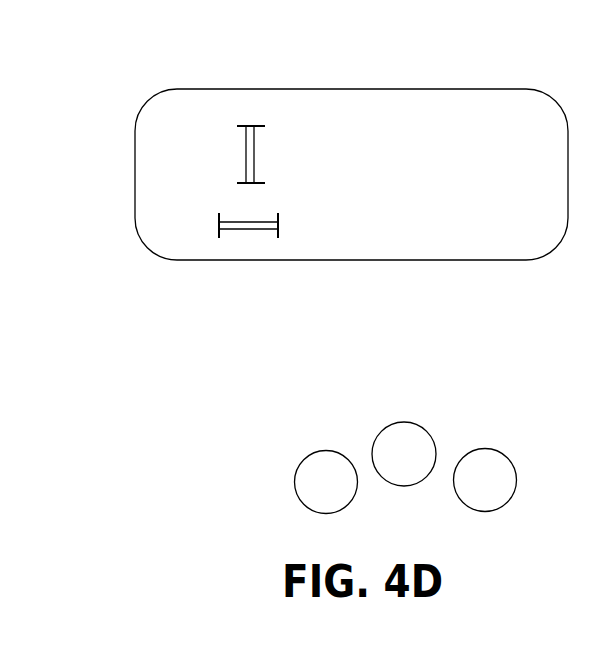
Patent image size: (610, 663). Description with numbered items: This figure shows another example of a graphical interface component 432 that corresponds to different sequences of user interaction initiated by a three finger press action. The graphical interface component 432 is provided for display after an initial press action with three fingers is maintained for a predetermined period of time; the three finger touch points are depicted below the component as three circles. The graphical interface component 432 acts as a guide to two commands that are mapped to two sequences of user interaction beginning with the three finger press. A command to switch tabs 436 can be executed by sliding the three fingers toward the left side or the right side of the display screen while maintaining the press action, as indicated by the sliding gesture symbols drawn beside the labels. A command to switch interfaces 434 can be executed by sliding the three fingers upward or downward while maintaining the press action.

The graphical interface component 432 is at (352, 89).
The command to switch tabs 436 is at (212, 162).
The command to switch interfaces 434 is at (213, 225).